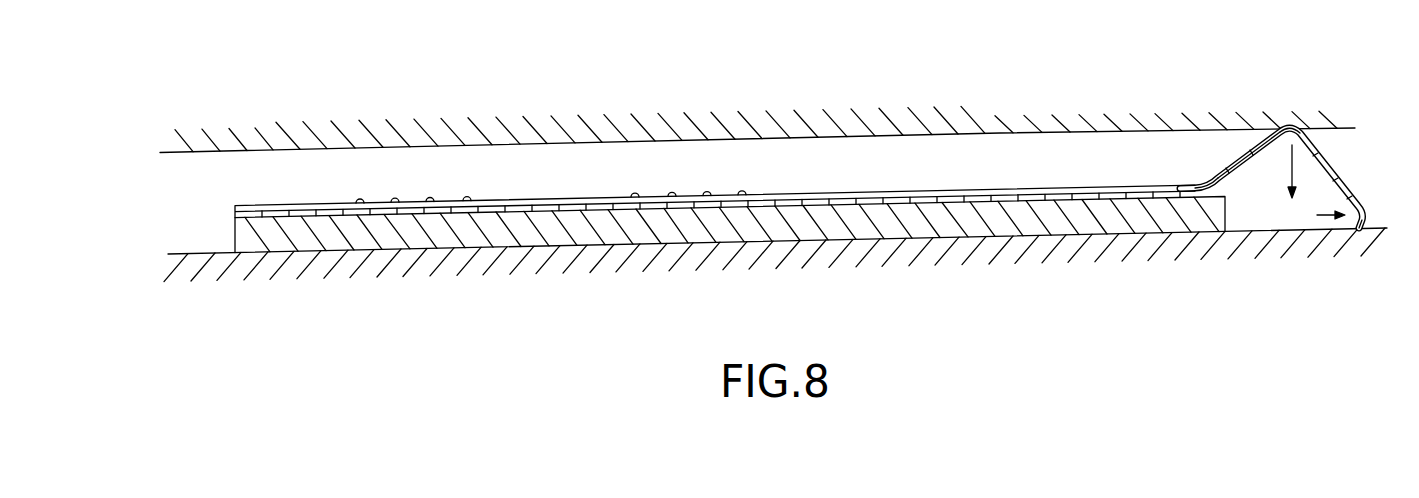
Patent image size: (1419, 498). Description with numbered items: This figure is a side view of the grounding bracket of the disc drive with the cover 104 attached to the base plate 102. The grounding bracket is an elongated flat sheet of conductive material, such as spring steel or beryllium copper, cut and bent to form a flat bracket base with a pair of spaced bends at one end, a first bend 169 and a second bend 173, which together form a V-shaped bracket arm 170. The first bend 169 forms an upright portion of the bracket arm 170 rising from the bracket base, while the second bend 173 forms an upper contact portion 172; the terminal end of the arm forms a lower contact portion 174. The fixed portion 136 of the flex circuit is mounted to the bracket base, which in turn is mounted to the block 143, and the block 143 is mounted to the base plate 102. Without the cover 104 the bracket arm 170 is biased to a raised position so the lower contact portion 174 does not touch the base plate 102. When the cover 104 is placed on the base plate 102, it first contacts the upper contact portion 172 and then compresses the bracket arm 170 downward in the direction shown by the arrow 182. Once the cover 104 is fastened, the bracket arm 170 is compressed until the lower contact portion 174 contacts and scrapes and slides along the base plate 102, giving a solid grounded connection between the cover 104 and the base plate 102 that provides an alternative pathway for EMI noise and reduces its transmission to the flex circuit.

The cover 104 is at (915, 131).
The base plate 102 is at (722, 260).
The block 143 is at (250, 237).
The fixed portion of the flex circuit 136 is at (857, 192).
The bracket arm 170 is at (1297, 179).
The upper contact portion 172 is at (1270, 127).
The second bend 173 is at (1298, 128).
The first bend 169 is at (1227, 195).
The arrow 182 is at (1293, 172).
The lower contact portion 174 is at (1352, 230).